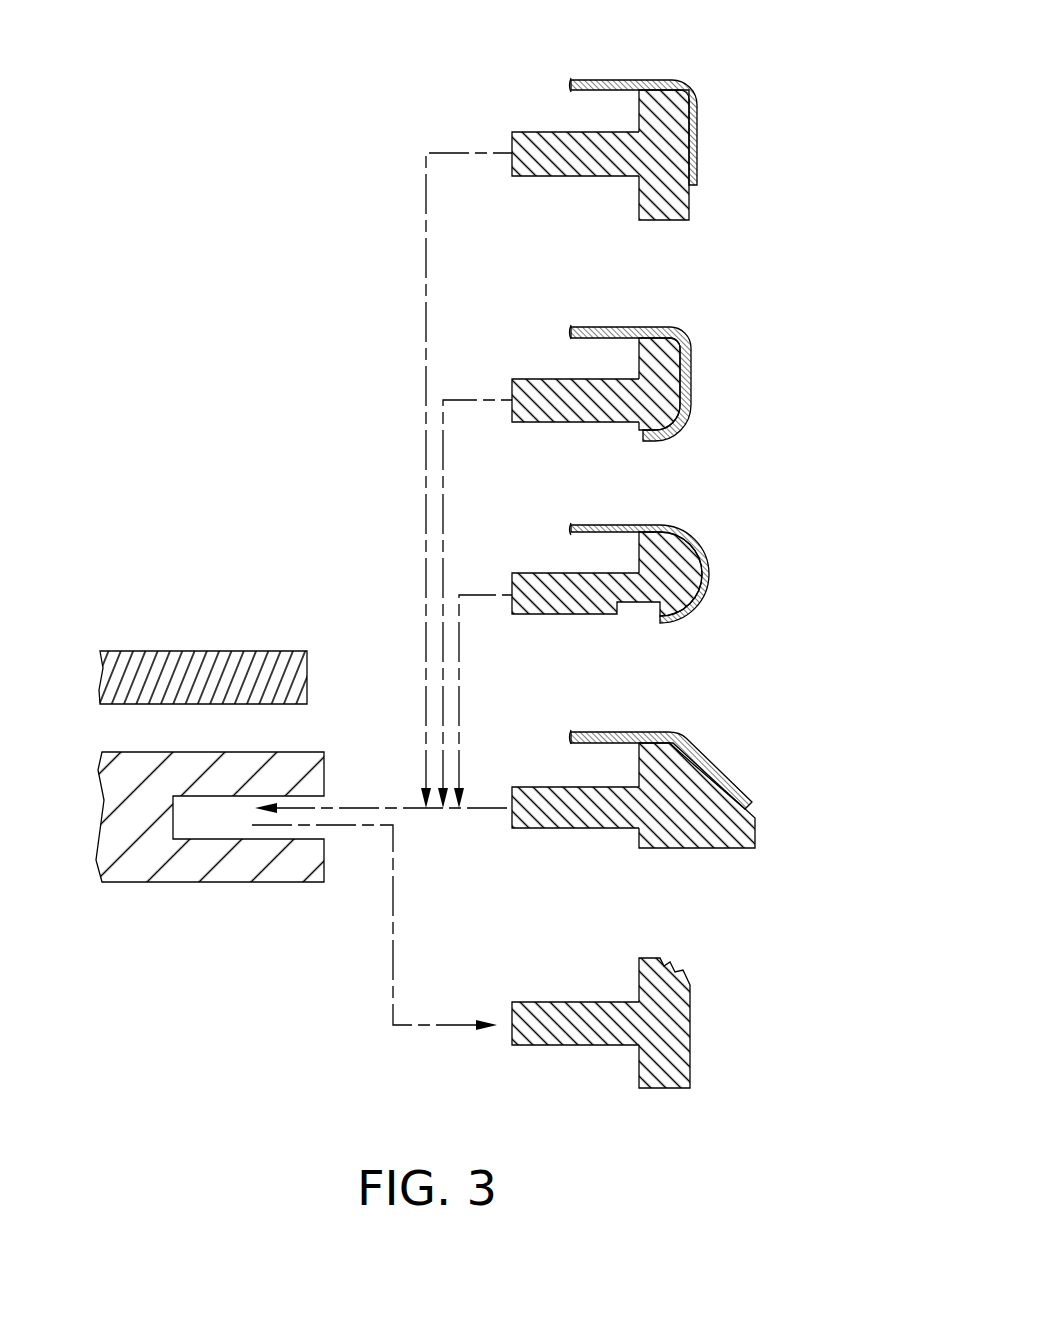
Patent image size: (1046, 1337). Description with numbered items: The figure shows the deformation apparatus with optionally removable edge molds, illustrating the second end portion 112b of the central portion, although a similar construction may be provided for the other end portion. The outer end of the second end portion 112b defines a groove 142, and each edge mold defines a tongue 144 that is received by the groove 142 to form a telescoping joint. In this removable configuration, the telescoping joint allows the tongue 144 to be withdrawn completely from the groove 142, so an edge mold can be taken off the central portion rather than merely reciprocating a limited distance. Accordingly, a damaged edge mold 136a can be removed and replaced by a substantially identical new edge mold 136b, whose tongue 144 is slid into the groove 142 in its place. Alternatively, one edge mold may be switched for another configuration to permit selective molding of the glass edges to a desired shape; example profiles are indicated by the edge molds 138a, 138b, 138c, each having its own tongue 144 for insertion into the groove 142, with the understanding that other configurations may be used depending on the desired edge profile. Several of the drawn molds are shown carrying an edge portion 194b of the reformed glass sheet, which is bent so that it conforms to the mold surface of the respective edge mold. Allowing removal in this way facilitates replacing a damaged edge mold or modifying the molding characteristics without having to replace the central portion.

The second end portion 112b is at (122, 901).
The groove 142 is at (223, 833).
The tongue 144 is at (525, 131).
The damaged edge mold 136a is at (692, 1025).
The new edge mold 136b is at (680, 90).
The edge mold 138a is at (683, 343).
The edge mold 138b is at (692, 536).
The edge mold 138c is at (703, 760).
The edge portion 194b is at (697, 150).